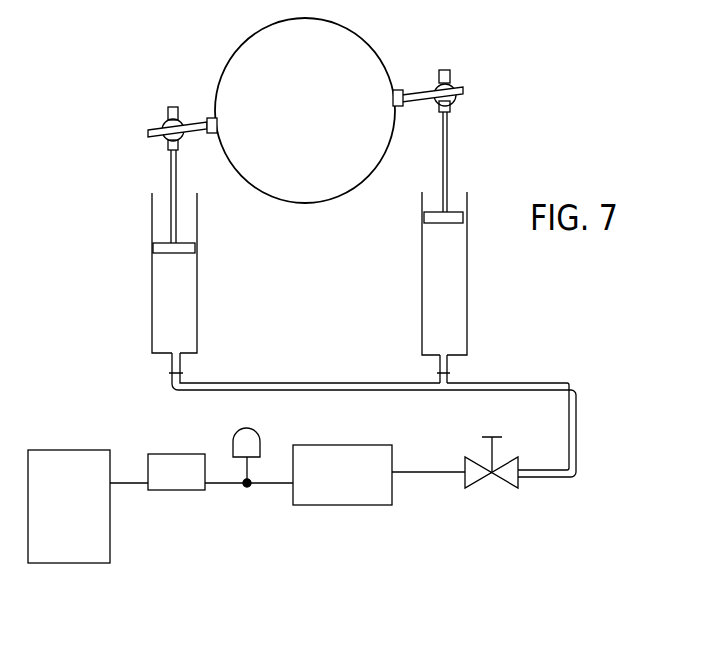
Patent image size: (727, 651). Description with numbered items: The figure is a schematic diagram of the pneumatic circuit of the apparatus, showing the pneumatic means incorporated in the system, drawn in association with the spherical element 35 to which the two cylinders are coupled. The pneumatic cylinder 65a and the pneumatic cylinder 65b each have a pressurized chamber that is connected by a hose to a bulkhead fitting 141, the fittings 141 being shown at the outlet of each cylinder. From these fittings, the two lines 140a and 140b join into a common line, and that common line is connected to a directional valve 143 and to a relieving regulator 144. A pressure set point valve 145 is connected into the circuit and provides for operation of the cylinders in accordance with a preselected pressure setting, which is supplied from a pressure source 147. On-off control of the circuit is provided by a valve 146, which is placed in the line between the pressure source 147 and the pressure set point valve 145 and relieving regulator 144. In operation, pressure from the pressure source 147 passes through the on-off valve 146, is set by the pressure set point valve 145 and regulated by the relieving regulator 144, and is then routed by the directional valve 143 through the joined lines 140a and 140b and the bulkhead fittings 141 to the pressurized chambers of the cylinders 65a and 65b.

The spherical vessel 35 is at (375, 63).
The pneumatic cylinder 65a is at (198, 297).
The pneumatic cylinder 65b is at (430, 297).
The line 140a is at (179, 357).
The line 140b is at (440, 362).
The bulkhead fitting 141 is at (180, 374).
The directional valve 143 is at (507, 477).
The relieving regulator 144 is at (342, 497).
The pressure set point valve 145 is at (253, 440).
The valve 146 is at (186, 481).
The pressure source 147 is at (106, 543).